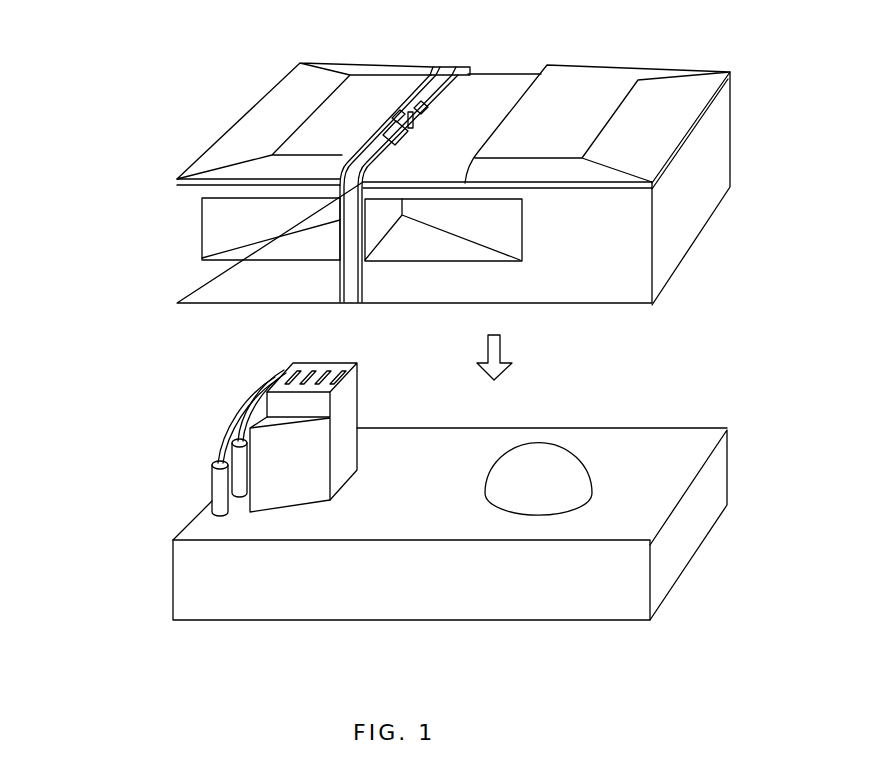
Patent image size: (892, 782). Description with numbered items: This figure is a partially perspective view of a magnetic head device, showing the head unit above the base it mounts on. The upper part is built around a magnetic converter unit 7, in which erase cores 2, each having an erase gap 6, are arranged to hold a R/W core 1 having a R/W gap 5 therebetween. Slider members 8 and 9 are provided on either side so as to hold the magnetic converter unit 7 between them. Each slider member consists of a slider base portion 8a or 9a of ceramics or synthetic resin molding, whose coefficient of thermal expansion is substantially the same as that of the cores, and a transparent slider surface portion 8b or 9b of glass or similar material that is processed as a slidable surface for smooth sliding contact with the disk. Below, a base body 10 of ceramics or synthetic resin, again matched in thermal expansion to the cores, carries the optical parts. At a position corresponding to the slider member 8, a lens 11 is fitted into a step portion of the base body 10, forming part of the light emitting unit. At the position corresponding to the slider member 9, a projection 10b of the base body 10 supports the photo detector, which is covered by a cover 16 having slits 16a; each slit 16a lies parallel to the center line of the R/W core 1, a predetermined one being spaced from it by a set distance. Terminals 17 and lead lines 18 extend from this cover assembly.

The R/W core 1 is at (350, 290).
The erase cores 2 is at (463, 67).
The R/W gap 5 is at (383, 133).
The erase gap 6 is at (402, 104).
The magnetic converter unit 7 is at (434, 50).
The slider member 8 is at (772, 95).
The slider base portion 8a is at (717, 167).
The slider surface portion 8b is at (703, 90).
The slider member 9 is at (125, 135).
The slider base portion 9a is at (177, 220).
The slider surface portion 9b is at (213, 158).
The base body 10 is at (700, 527).
The projection 10b is at (352, 418).
The lens 11 is at (500, 468).
The cover 16 is at (352, 383).
The slits 16a is at (325, 367).
The terminals 17 is at (231, 446).
The lead lines 18 is at (237, 408).